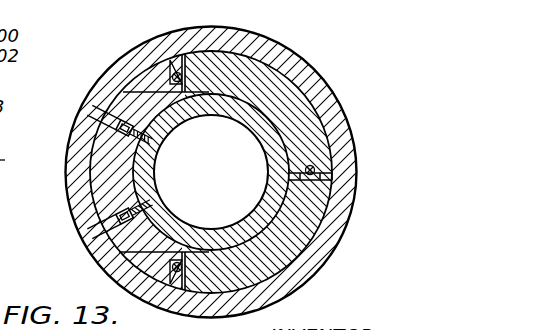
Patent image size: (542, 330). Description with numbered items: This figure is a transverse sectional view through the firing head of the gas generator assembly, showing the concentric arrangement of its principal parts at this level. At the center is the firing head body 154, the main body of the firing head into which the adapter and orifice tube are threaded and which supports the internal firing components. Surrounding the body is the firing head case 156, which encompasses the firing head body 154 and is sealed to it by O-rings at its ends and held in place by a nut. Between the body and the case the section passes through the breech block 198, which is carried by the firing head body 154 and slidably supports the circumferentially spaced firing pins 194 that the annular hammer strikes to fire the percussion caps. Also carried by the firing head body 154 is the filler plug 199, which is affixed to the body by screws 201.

The firing head body 154 is at (272, 116).
The firing head case 156 is at (321, 247).
The firing pins 194 is at (177, 73).
The breech block 198 is at (285, 65).
The filler plug 199 is at (103, 182).
The screws 201 is at (110, 110).